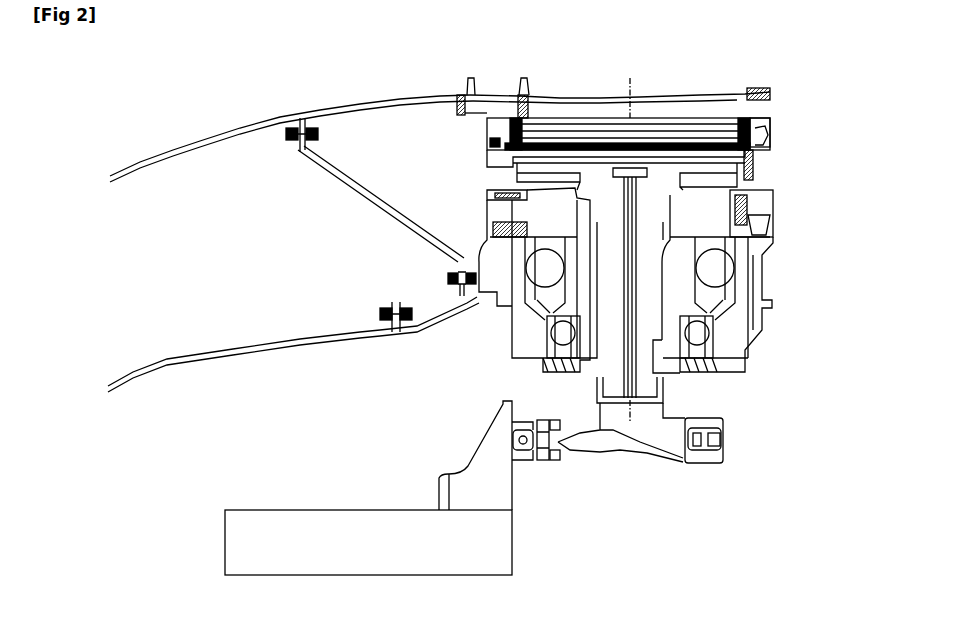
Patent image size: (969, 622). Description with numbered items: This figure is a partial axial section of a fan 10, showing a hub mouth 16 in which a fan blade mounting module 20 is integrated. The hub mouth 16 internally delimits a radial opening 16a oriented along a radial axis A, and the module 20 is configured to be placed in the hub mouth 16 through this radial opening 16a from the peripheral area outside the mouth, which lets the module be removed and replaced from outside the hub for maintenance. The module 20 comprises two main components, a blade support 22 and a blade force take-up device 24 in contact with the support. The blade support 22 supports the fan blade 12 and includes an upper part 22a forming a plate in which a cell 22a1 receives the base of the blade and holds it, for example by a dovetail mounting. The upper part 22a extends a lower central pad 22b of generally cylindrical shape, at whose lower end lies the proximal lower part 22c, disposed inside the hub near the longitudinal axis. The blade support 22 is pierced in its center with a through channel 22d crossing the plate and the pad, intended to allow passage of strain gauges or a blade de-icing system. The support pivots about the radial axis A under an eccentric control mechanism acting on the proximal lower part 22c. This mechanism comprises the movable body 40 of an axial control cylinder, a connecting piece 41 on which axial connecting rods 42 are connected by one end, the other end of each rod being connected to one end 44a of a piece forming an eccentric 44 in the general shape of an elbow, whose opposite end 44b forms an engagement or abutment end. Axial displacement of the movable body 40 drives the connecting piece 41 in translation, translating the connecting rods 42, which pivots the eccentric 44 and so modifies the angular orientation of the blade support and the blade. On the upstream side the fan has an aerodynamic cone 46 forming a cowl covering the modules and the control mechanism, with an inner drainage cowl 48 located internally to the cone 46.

The rotating machine assembly 10 is at (112, 93).
The fan blade 12 is at (719, 94).
The hub mouth 16 is at (780, 248).
The radial opening 16a is at (736, 194).
The fan blade mounting module 20 is at (468, 188).
The blade support 22 is at (566, 191).
The upper part 22a is at (780, 133).
The cell 22a1 is at (562, 117).
The lower central pad 22b is at (598, 267).
The proximal lower part 22c is at (680, 378).
The through channel 22d is at (630, 305).
The blade force take-up device 24 is at (760, 268).
The movable body 40 is at (331, 504).
The connecting piece 41 is at (468, 451).
The axial connecting rod 42 is at (571, 452).
The eccentric piece 44 is at (677, 464).
The connecting rod end of the eccentric 44a is at (736, 427).
The engagement end 44b is at (590, 394).
The aerodynamic cone 46 is at (175, 151).
The inner drainage cowl 48 is at (178, 360).
The radial axis A is at (633, 90).